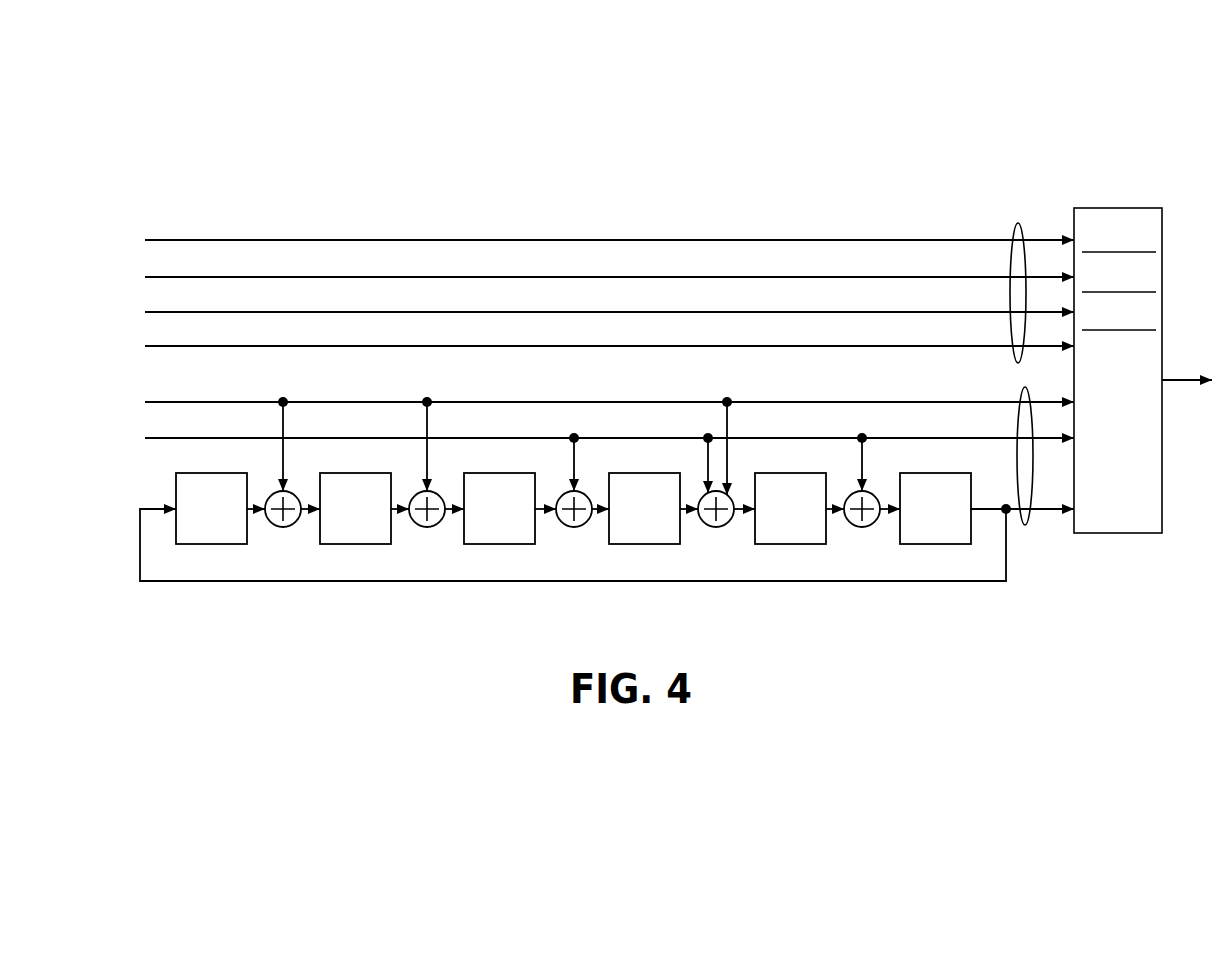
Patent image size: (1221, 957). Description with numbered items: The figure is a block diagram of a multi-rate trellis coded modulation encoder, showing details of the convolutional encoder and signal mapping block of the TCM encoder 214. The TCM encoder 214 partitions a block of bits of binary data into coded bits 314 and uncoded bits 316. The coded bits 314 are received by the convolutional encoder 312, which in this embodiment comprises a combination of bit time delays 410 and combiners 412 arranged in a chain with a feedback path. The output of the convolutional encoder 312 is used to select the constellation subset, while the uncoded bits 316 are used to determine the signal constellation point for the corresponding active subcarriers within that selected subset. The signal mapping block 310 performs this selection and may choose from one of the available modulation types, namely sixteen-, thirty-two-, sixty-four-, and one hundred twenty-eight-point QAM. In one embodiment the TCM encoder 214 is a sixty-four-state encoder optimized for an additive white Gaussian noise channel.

The TCM encoder 214 is at (975, 173).
The signal mapping block 310 is at (1135, 208).
The convolutional encoder 312 is at (532, 591).
The coded bits 314 is at (225, 402).
The uncoded bits 316 is at (225, 240).
The bit time delays 410 is at (208, 545).
The combiners 412 is at (278, 528).